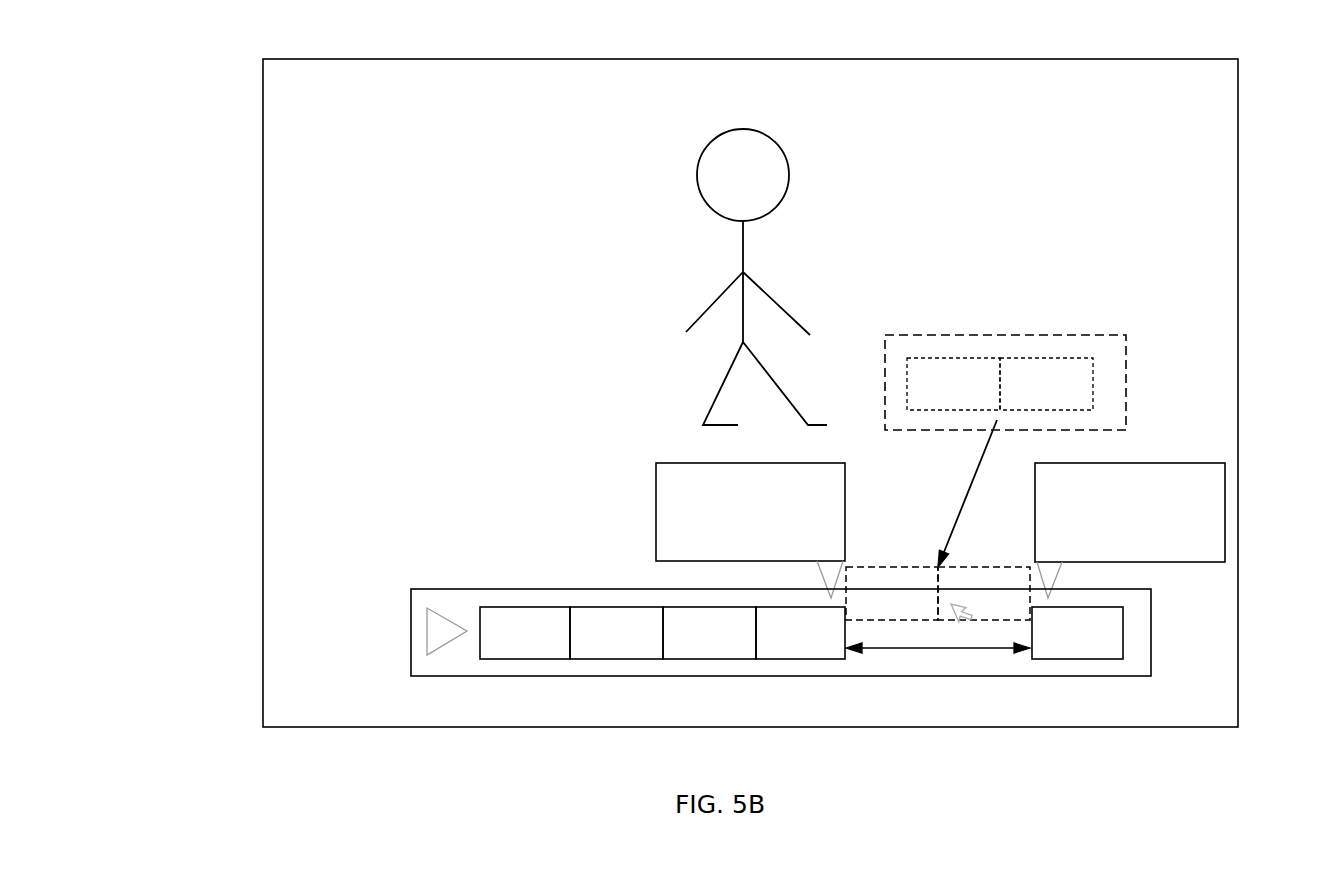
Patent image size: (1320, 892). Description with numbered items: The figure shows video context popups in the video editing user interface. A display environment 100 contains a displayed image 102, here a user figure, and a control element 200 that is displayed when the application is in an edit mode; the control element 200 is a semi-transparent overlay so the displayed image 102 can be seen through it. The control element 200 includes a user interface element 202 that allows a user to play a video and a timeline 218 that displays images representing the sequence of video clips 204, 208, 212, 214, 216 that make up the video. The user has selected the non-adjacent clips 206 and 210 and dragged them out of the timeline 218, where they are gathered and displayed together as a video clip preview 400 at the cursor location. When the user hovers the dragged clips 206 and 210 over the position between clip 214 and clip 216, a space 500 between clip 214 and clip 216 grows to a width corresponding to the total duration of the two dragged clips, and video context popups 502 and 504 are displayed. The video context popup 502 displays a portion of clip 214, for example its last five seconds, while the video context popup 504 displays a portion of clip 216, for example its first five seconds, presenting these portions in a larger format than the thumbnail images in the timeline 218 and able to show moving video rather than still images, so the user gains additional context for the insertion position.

The display environment 100 is at (244, 173).
The displayed image 102 is at (611, 265).
The control element 200 is at (498, 574).
The user interface element 202 is at (409, 629).
The video clip 204 is at (525, 633).
The video clip 206 is at (923, 489).
The video clip 208 is at (616, 633).
The video clip 210 is at (1015, 489).
The video clip 212 is at (709, 633).
The video clip 214 is at (800, 633).
The video clip 216 is at (1077, 633).
The timeline 218 is at (1138, 627).
The video clip preview 400 is at (1027, 306).
The space 500 is at (938, 635).
The video context popup 502 is at (750, 530).
The video context popup 504 is at (1130, 530).